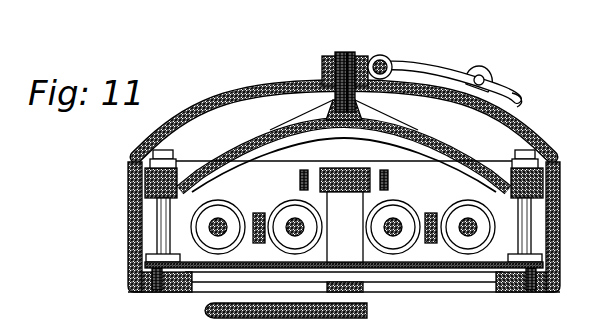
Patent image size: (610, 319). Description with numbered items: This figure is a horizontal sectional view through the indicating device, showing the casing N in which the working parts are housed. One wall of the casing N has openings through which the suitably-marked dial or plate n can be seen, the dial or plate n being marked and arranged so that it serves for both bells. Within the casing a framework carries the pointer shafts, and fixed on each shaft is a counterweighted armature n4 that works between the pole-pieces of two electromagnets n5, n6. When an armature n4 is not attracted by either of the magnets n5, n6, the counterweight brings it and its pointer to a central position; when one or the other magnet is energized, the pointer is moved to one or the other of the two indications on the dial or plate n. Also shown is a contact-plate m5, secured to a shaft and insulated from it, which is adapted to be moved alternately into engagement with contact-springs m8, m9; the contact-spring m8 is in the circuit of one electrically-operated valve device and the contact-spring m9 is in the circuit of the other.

The casing N is at (358, 203).
The dial or plate n is at (456, 271).
The counterweighted armature n4 is at (259, 213).
The electromagnet n5 is at (218, 213).
The electromagnet n6 is at (294, 212).
The contact-plate m5 is at (341, 169).
The contact-spring m8 is at (303, 171).
The contact-spring m9 is at (386, 171).